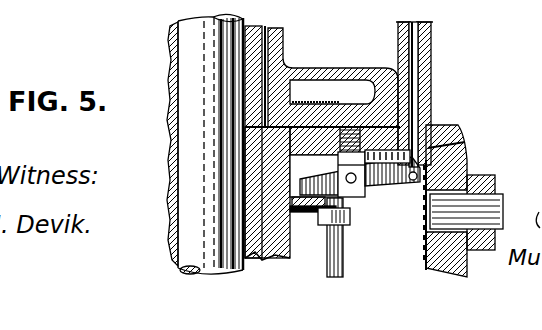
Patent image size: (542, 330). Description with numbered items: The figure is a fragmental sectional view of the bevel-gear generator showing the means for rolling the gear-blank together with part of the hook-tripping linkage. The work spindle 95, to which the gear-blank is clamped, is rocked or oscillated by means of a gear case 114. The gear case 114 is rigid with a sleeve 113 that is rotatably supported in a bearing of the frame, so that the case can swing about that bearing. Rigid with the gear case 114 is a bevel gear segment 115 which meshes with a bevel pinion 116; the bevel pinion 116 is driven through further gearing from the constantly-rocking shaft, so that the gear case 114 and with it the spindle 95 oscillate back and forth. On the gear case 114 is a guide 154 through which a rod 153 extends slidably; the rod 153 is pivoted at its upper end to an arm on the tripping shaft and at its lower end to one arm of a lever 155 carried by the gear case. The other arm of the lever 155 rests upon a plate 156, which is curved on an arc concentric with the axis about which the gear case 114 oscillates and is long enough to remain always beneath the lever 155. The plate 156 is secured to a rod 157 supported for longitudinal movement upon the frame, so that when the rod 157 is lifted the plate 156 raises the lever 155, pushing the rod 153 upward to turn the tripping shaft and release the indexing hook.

The work spindle 95 is at (178, 85).
The sleeve 113 is at (170, 171).
The gear case 114 is at (326, 58).
The bevel gear segment 115 is at (465, 139).
The bevel pinion 116 is at (428, 270).
The rod 153 is at (418, 22).
The guide 154 is at (432, 62).
The lever 155 is at (384, 184).
The plate 156 is at (310, 214).
The rod 157 is at (345, 259).